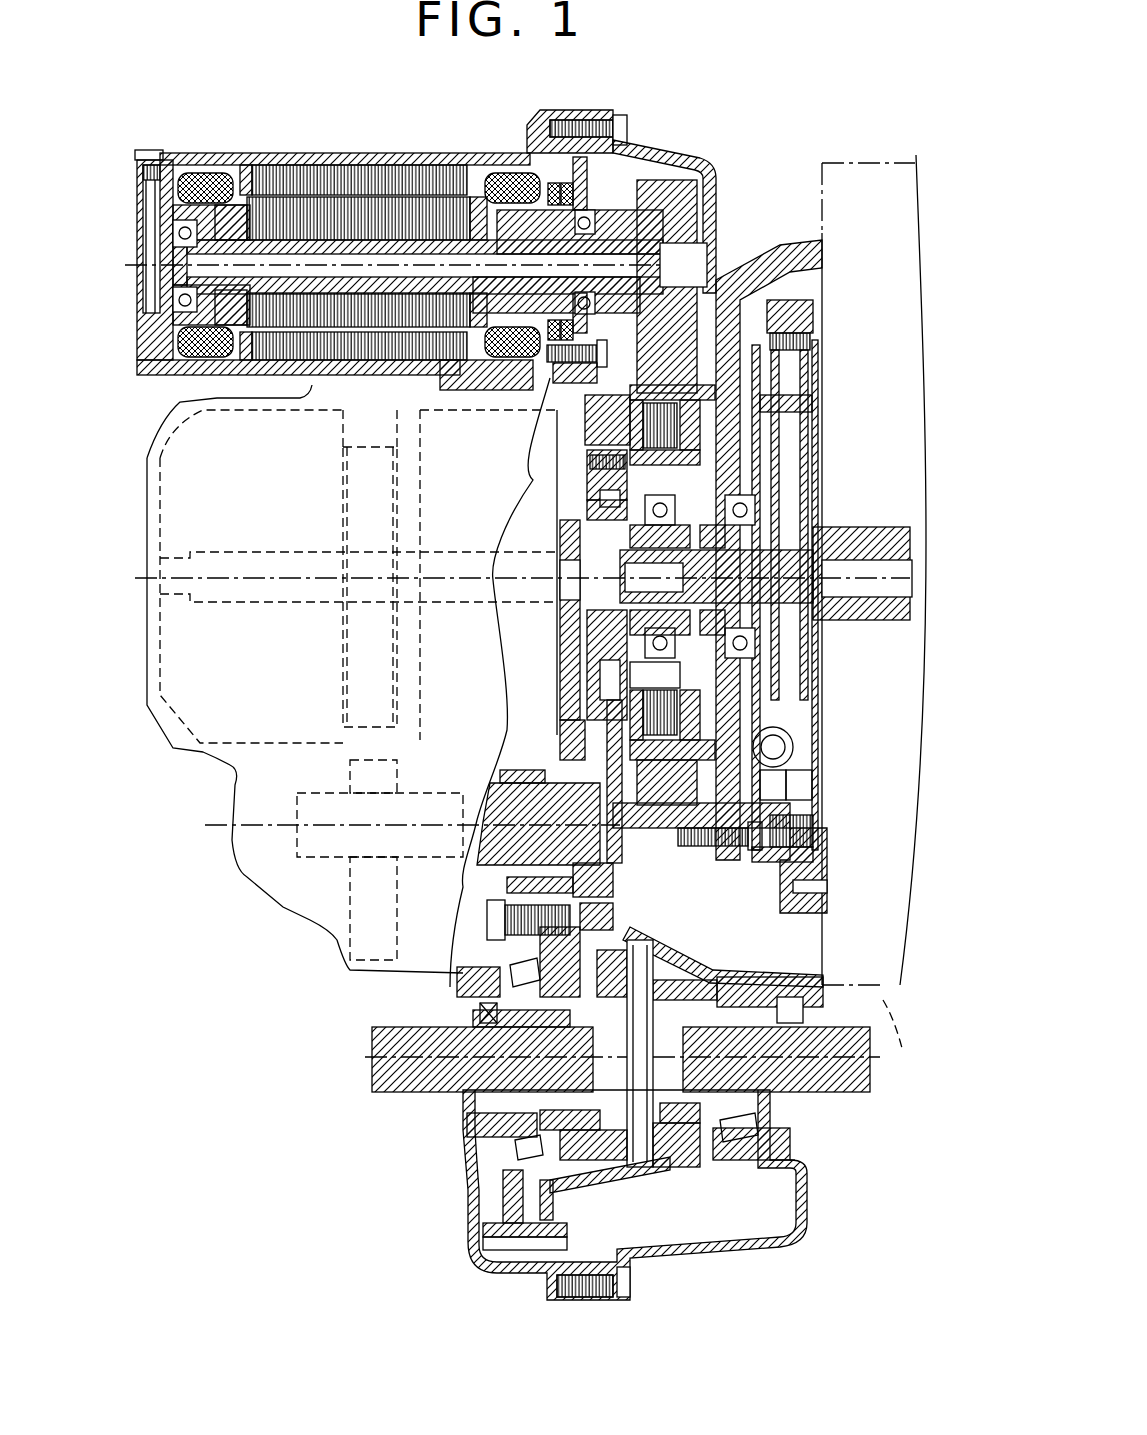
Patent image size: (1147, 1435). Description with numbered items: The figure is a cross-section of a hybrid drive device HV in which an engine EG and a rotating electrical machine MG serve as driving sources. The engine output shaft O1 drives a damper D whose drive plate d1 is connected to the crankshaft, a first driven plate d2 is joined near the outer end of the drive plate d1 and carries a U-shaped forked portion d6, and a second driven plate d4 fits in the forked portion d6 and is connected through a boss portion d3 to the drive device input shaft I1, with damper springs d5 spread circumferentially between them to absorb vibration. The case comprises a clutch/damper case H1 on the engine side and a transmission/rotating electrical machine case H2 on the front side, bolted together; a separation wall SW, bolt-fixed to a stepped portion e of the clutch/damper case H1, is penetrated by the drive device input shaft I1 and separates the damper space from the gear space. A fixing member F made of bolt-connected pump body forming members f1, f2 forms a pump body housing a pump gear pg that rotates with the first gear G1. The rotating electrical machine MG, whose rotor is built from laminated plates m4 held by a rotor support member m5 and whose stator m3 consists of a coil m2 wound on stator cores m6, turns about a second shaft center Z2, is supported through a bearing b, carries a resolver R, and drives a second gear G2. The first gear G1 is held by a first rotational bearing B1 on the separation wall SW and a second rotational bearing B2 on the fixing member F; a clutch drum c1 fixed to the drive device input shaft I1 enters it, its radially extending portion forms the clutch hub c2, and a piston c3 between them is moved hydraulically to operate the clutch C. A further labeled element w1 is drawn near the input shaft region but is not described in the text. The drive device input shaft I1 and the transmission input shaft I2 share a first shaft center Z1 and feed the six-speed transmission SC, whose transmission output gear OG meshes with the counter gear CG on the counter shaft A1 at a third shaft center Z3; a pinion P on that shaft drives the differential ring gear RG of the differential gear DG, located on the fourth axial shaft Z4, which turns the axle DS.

The rotating electrical machine MG is at (264, 150).
The stator cores m6 is at (355, 232).
The stator m3 is at (413, 172).
The laminated plates m4 is at (320, 230).
The coil m2 is at (170, 368).
The rotor support member m5 is at (467, 378).
The resolver R is at (545, 160).
The bearing b is at (587, 212).
The second gear G2 is at (660, 195).
The separation wall SW is at (752, 292).
The clutch C is at (697, 410).
The damper D is at (820, 587).
The second driven plate d4 is at (790, 398).
The drive plate d1 is at (818, 722).
The first driven plate d2 is at (813, 843).
The boss portion d3 is at (793, 677).
The damper springs d5 is at (795, 748).
The forked portion d6 is at (795, 773).
The engine EG is at (883, 620).
The second shaft center Z2 is at (376, 265).
The first shaft center Z1 is at (505, 577).
The third shaft center Z3 is at (394, 825).
The fourth axial shaft Z4 is at (604, 1058).
The transmission output gear OG is at (380, 432).
The first gear G1 is at (555, 378).
The fixing member F is at (537, 475).
The pump body forming member f1 is at (580, 505).
The pump body forming member f2 is at (585, 430).
The transmission input shaft I2 is at (578, 550).
The drive device input shaft I1 is at (857, 613).
The engine output shaft O1 is at (872, 537).
The bearing w1 is at (763, 507).
The pump gear pg is at (580, 628).
The second rotational bearing B2 is at (580, 657).
The first rotational bearing B1 is at (752, 648).
The clutch drum c1 is at (693, 733).
The clutch hub c2 is at (600, 712).
The piston c3 is at (686, 683).
The pinion P is at (503, 772).
The counter shaft A1 is at (493, 853).
The stepped portion e is at (718, 853).
The transmission SC is at (247, 743).
The hybrid drive device HV is at (230, 915).
The counter gear CG is at (350, 975).
The axle DS is at (418, 1085).
The differential gear DG is at (685, 1168).
The differential ring gear RG is at (570, 1248).
The transmission/rotating electrical machine case H2 is at (467, 1197).
The clutch/damper case H1 is at (807, 1193).